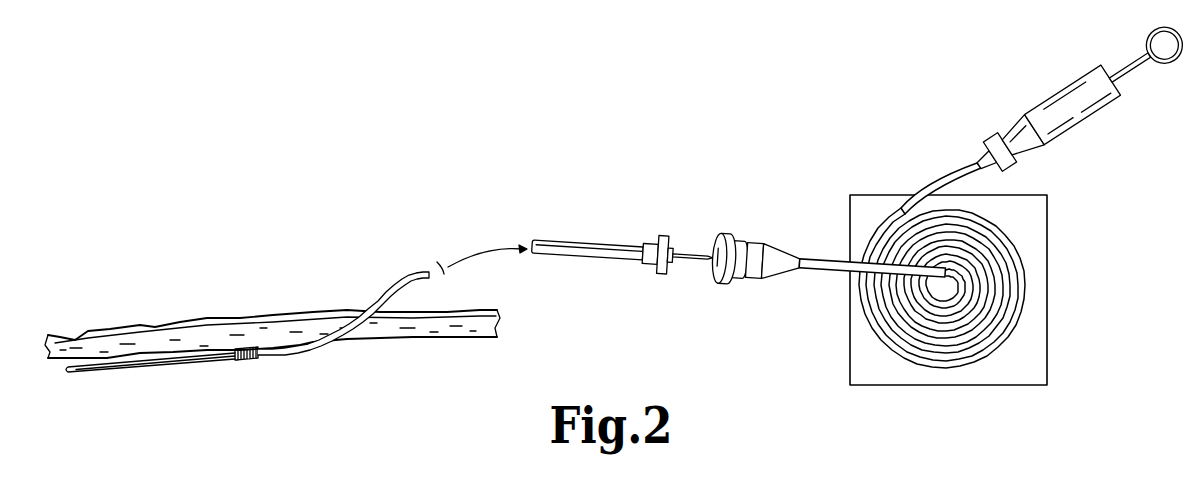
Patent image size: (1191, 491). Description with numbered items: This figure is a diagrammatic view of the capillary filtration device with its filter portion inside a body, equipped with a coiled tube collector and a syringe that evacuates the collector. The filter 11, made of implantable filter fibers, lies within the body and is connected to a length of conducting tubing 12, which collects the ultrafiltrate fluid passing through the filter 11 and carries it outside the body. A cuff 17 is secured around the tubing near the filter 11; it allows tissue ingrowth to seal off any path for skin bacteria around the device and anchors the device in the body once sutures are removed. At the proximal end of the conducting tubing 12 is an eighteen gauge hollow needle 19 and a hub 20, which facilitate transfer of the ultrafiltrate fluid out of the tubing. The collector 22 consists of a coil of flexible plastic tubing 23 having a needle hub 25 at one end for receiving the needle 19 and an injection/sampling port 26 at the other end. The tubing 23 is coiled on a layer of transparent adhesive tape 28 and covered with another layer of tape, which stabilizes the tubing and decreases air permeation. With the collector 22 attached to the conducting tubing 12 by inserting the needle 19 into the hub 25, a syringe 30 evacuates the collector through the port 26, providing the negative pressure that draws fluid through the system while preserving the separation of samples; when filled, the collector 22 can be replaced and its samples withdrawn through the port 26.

The filter 11 is at (188, 367).
The conducting tubing 12 is at (424, 272).
The cuff 17 is at (257, 363).
The hollow needle 19 is at (700, 251).
The hub 20 is at (653, 238).
The collector 22 is at (912, 189).
The coil of flexible plastic tubing 23 is at (867, 312).
The needle hub 25 is at (782, 254).
The injection/sampling port 26 is at (988, 137).
The transparent adhesive tape 28 is at (1040, 372).
The syringe 30 is at (1088, 84).